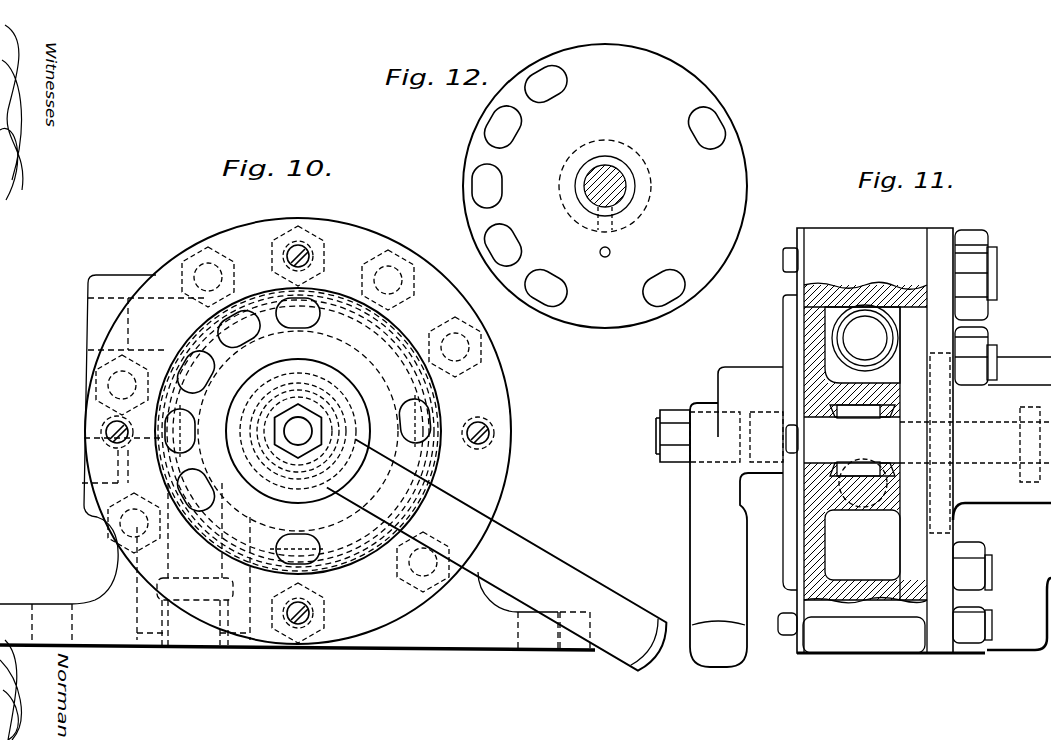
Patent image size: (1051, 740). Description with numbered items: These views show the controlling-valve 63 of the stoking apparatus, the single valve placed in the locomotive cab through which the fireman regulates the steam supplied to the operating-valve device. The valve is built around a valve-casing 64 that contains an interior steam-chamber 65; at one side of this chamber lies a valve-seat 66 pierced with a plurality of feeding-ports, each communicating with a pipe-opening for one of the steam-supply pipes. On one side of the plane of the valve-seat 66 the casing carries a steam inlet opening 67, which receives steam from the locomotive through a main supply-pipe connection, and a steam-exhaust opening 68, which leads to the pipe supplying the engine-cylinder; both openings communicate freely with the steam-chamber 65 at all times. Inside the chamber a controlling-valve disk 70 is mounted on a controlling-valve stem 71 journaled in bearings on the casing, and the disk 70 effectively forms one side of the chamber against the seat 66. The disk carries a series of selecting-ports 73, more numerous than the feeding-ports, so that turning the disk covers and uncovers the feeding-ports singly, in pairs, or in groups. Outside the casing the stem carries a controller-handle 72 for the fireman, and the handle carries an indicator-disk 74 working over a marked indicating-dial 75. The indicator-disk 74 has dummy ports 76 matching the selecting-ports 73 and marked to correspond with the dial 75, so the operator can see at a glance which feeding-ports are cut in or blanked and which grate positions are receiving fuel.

In FIG. 10, the controlling-valve 63 is at (297, 438).
In FIG. 11, the controlling-valve 63 is at (798, 283).
In FIG. 11, the valve-casing 64 is at (852, 236).
In FIG. 11, the interior steam-chamber 65 is at (862, 545).
In FIG. 11, the valve-seat 66 is at (927, 553).
In FIG. 11, the steam inlet opening 67 is at (857, 343).
In FIG. 11, the steam-exhaust opening 68 is at (822, 488).
In FIG. 12, the controlling-valve disk 70 is at (693, 88).
In FIG. 11, the controlling-valve disk 70 is at (917, 333).
In FIG. 10, the controlling-valve stem 71 is at (298, 431).
In FIG. 12, the controlling-valve stem 71 is at (627, 178).
In FIG. 11, the controlling-valve stem 71 is at (853, 456).
In FIG. 10, the controller-handle 72 is at (522, 545).
In FIG. 11, the controller-handle 72 is at (693, 533).
In FIG. 12, the selecting-ports 73 is at (723, 135).
In FIG. 10, the indicator-disk 74 is at (339, 308).
In FIG. 11, the indicator-disk 74 is at (787, 558).
In FIG. 10, the indicating-dial 75 is at (500, 393).
In FIG. 10, the dummy ports 76 is at (255, 338).